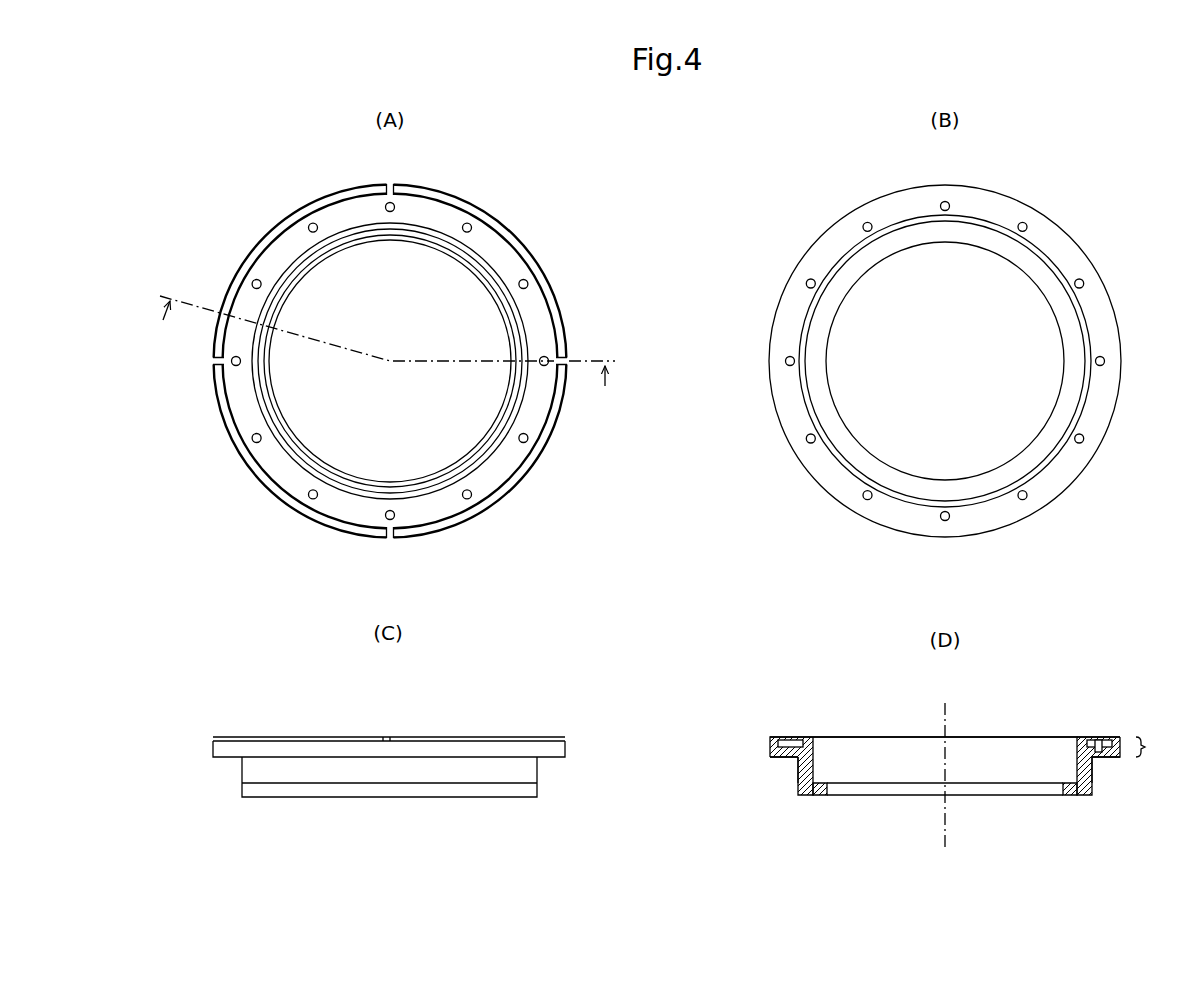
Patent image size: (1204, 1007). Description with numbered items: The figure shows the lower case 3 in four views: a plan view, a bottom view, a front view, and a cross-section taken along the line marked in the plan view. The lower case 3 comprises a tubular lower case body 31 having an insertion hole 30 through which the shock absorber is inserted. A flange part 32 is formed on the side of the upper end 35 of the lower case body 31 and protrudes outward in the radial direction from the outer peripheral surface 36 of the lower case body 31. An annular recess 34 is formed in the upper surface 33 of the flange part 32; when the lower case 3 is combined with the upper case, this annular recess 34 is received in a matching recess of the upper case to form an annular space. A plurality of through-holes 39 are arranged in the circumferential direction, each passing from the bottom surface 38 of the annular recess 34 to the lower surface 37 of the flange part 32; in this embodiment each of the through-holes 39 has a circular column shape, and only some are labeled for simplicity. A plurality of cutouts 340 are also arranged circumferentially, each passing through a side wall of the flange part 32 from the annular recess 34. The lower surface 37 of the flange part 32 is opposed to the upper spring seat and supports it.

The lower case 3 is at (604, 143).
The insertion hole 30 is at (322, 297).
The lower case body 31 is at (532, 236).
The flange part 32 is at (566, 292).
The upper surface 33 is at (280, 736).
The annular recess 34 is at (427, 213).
The cutouts 340 is at (387, 184).
The upper end 35 is at (1154, 744).
The outer peripheral surface 36 is at (1106, 345).
The lower surface 37 is at (790, 758).
The bottom surface 38 is at (790, 754).
The through-holes 39 is at (470, 497).